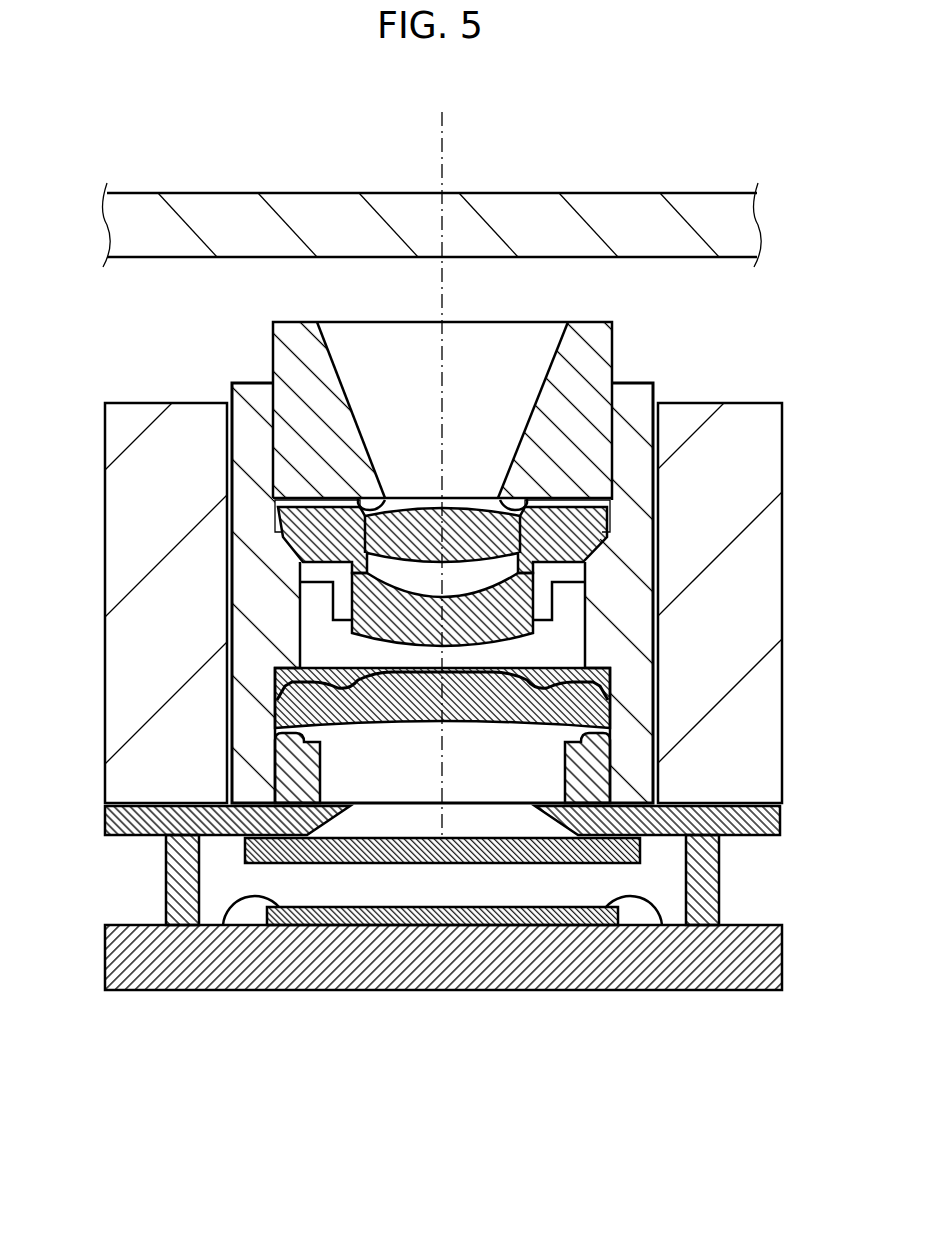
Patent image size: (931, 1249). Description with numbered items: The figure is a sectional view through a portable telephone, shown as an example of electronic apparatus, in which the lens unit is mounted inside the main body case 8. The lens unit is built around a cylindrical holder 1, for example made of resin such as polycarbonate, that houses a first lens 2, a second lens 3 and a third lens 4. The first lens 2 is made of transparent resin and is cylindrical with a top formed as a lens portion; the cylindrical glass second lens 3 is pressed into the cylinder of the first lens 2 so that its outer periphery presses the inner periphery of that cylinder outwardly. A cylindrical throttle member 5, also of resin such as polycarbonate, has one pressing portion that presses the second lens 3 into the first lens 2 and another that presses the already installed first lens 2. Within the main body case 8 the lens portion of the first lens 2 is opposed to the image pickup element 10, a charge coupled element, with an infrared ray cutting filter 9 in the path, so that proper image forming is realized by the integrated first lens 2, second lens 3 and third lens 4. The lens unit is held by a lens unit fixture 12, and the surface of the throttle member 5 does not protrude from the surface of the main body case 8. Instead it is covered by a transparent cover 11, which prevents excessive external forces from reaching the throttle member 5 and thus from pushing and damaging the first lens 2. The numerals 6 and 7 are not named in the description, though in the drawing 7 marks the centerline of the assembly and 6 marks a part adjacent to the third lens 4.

The holder 1 is at (632, 537).
The first lens 2 is at (530, 605).
The second lens 3 is at (390, 536).
The third lens 4 is at (288, 702).
The throttle member 5 is at (288, 357).
The spacer 6 is at (293, 771).
The optical axis 7 is at (442, 160).
The main body case 8 is at (242, 292).
The infrared ray cutting filter 9 is at (642, 852).
The image pickup element 10 is at (317, 915).
The transparent cover 11 is at (645, 217).
The lens unit fixture 12 is at (752, 425).